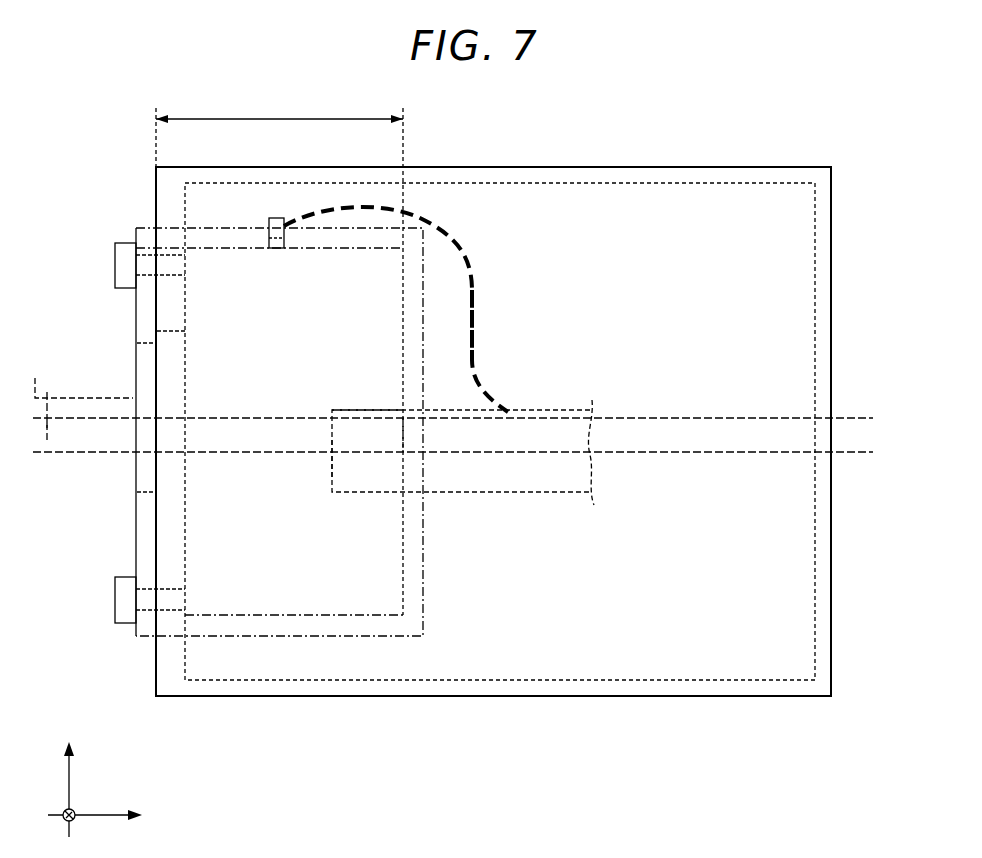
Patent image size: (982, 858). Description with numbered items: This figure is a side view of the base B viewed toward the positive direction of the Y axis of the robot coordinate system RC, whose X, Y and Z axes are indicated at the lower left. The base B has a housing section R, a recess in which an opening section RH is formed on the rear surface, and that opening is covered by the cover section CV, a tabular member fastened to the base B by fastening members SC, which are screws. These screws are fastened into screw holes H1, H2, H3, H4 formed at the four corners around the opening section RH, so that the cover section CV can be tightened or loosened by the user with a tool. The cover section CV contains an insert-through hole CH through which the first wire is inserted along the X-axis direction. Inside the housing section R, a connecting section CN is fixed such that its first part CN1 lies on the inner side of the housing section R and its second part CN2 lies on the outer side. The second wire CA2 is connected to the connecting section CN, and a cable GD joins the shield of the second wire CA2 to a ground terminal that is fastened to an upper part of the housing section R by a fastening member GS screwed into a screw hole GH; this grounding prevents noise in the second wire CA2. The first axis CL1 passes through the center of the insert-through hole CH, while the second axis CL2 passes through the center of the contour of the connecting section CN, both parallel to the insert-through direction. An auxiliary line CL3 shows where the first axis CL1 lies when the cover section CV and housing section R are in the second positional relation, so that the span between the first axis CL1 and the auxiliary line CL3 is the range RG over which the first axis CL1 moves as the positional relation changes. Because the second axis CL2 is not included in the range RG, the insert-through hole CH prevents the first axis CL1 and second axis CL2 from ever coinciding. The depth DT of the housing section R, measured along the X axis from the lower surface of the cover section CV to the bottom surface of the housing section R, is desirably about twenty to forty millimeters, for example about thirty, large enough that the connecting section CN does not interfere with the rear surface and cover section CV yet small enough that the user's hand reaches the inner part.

The base B is at (833, 229).
The depth DT is at (279, 354).
The cover section CV is at (133, 320).
The fastening member SC is at (113, 262).
The fastening member GS is at (284, 218).
The screw hole GH is at (275, 240).
The cable GD is at (466, 255).
The housing section R is at (423, 336).
The first axis CL1 is at (842, 418).
The second axis CL2 is at (840, 452).
The auxiliary line CL3 is at (47, 390).
The insert-through hole CH is at (130, 380).
The range RG is at (47, 430).
The opening section RH is at (160, 465).
The second wire CA2 is at (533, 493).
The connecting section CN is at (347, 408).
The first part CN1 is at (318, 478).
The second part CN2 is at (418, 433).
The screw hole H1 is at (170, 248).
The screw hole H2 is at (211, 194).
The screw hole H3 is at (175, 612).
The screw hole H4 is at (237, 683).
The robot coordinate system RC is at (88, 798).